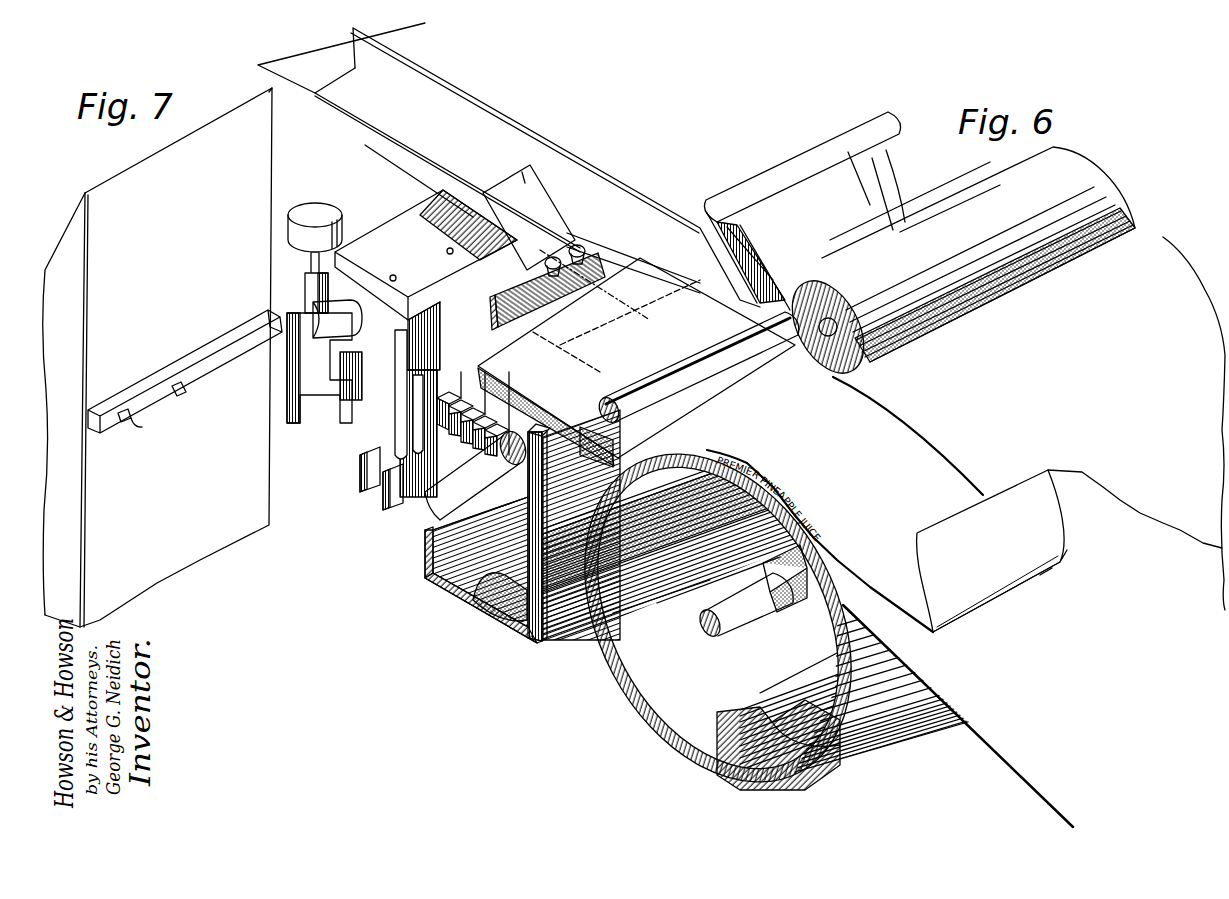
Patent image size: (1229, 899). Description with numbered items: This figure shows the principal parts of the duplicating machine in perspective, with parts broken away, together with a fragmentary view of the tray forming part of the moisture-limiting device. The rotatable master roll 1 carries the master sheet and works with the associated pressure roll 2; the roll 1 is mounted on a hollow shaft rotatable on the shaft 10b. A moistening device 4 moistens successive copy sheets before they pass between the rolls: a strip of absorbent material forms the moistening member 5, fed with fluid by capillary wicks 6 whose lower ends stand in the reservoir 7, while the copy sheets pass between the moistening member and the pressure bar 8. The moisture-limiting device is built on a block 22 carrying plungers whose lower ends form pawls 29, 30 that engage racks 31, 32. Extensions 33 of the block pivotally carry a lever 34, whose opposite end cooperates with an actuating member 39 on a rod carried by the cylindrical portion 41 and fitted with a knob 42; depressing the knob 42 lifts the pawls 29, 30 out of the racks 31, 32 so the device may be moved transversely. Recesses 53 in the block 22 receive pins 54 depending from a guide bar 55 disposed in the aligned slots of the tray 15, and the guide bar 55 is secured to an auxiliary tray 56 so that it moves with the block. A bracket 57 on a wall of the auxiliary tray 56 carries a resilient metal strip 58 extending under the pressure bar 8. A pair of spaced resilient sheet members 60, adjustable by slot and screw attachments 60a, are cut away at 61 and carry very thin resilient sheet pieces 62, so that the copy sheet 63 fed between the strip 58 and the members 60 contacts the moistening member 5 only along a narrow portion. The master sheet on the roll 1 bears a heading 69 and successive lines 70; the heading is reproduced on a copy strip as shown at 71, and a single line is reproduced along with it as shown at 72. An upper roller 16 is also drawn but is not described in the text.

In FIG. 6, the master roll 1 is at (1163, 237).
In FIG. 6, the pressure roll 2 is at (963, 200).
In FIG. 6, the moistening device 4 is at (458, 578).
In FIG. 6, the moistening member 5 is at (557, 400).
In FIG. 6, the capillary wicks 6 is at (500, 612).
In FIG. 6, the reservoir 7 is at (525, 638).
In FIG. 6, the pressure bar 8 is at (608, 406).
In FIG. 6, the shaft 10b is at (711, 637).
In FIG. 6, the tray 15 is at (295, 58).
In FIG. 6, the upper roller 16 is at (783, 170).
In FIG. 6, the block 22 is at (367, 273).
In FIG. 6, the pawl 29 is at (395, 428).
In FIG. 6, the pawl 30 is at (447, 390).
In FIG. 6, the rack 31 is at (367, 492).
In FIG. 6, the rack 32 is at (392, 507).
In FIG. 6, the extensions 33 is at (362, 402).
In FIG. 6, the lever 34 is at (305, 392).
In FIG. 6, the actuating member 39 is at (300, 344).
In FIG. 6, the cylindrical portion 41 is at (355, 357).
In FIG. 6, the knob 42 is at (321, 206).
In FIG. 6, the recesses 53 is at (447, 252).
In FIG. 7, the pins 54 is at (142, 427).
In FIG. 7, the guide bar 55 is at (220, 363).
In FIG. 7, the auxiliary tray 56 is at (128, 178).
In FIG. 6, the auxiliary tray 56 is at (470, 94).
In FIG. 6, the bracket 57 is at (597, 262).
In FIG. 6, the resilient metal strip 58 is at (530, 172).
In FIG. 6, the resilient sheet members 60 is at (505, 342).
In FIG. 6, the slot and screw attachments 60a is at (456, 318).
In FIG. 6, the cut-away portions 61 is at (727, 383).
In FIG. 6, the resilient sheet pieces 62 is at (735, 386).
In FIG. 6, the copy sheet 63 is at (955, 622).
In FIG. 6, the heading 69 is at (1157, 412).
In FIG. 6, the lines 70 is at (1010, 360).
In FIG. 6, the reproduced heading 71 is at (1010, 534).
In FIG. 6, the line reproduction 72 is at (965, 560).